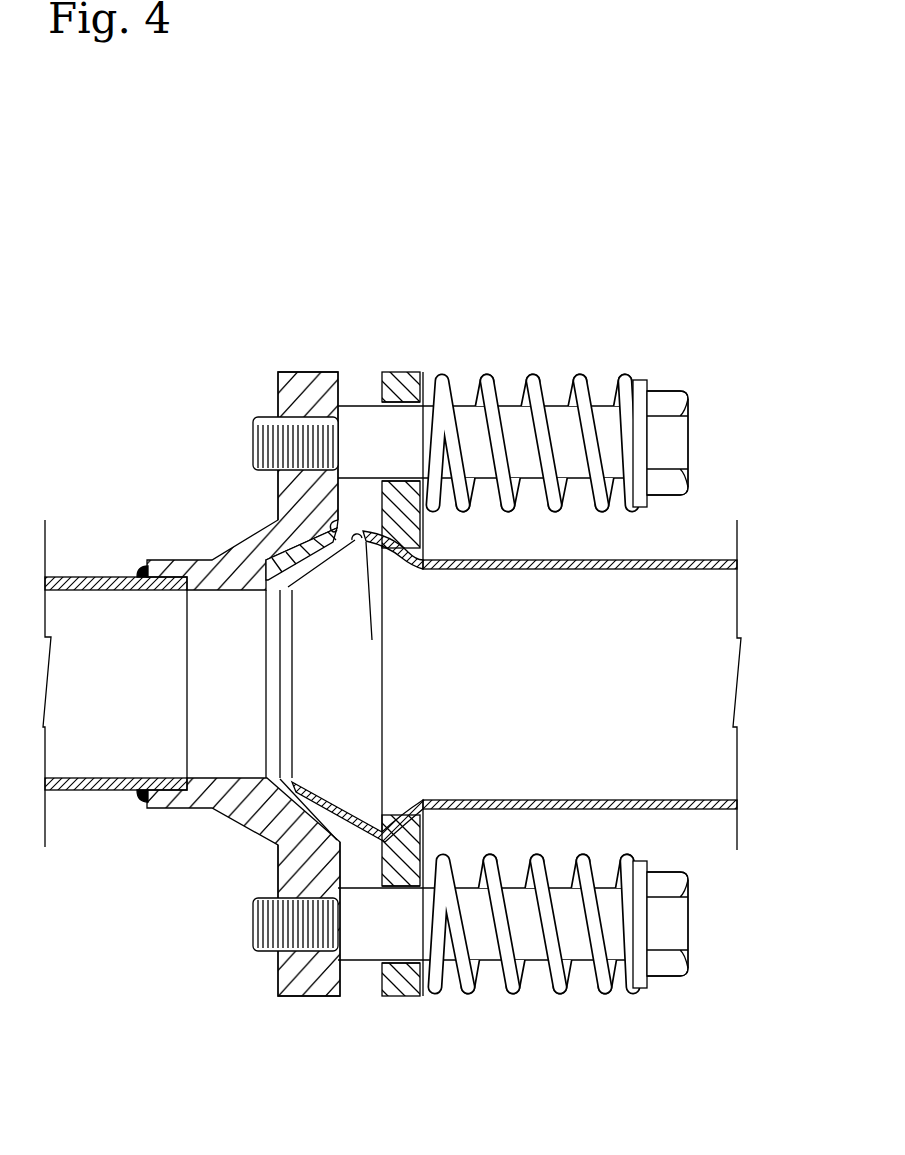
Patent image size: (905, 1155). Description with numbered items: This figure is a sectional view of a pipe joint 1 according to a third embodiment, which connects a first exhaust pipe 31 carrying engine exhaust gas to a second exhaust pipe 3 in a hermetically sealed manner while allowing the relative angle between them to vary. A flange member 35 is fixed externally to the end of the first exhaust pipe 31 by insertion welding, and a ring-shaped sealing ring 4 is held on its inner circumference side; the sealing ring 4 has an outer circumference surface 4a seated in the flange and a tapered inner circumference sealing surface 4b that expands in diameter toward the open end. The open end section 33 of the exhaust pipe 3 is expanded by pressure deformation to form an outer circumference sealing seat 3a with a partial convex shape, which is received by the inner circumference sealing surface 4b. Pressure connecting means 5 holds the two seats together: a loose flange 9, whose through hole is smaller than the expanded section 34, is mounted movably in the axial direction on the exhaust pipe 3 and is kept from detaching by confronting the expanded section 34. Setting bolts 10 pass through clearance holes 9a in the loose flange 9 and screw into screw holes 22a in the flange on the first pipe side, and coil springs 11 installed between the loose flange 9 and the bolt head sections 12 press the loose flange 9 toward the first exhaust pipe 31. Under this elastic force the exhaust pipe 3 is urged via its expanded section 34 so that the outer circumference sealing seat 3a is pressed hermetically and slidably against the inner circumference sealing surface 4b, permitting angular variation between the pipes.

The pipe joint 1 is at (207, 339).
The exhaust pipe 3 is at (693, 548).
The outer circumference sealing seat 3a is at (385, 567).
The ring-shaped sealing ring 4 is at (266, 573).
The outer circumference surface 4a is at (335, 522).
The inner circumference sealing surface 4b is at (298, 585).
The pressure connecting means 5 is at (468, 328).
The loose flange 9 is at (402, 358).
The clearance holes 9a is at (388, 402).
The setting bolts 10 is at (653, 374).
The coil springs 11 is at (545, 377).
The bolt head sections 12 is at (689, 400).
The screw holes 22a is at (283, 424).
The first exhaust pipe 31 is at (102, 547).
The exhaust pipe open end section 33 is at (296, 784).
The expanded section 34 is at (418, 535).
The flange member 35 is at (292, 372).